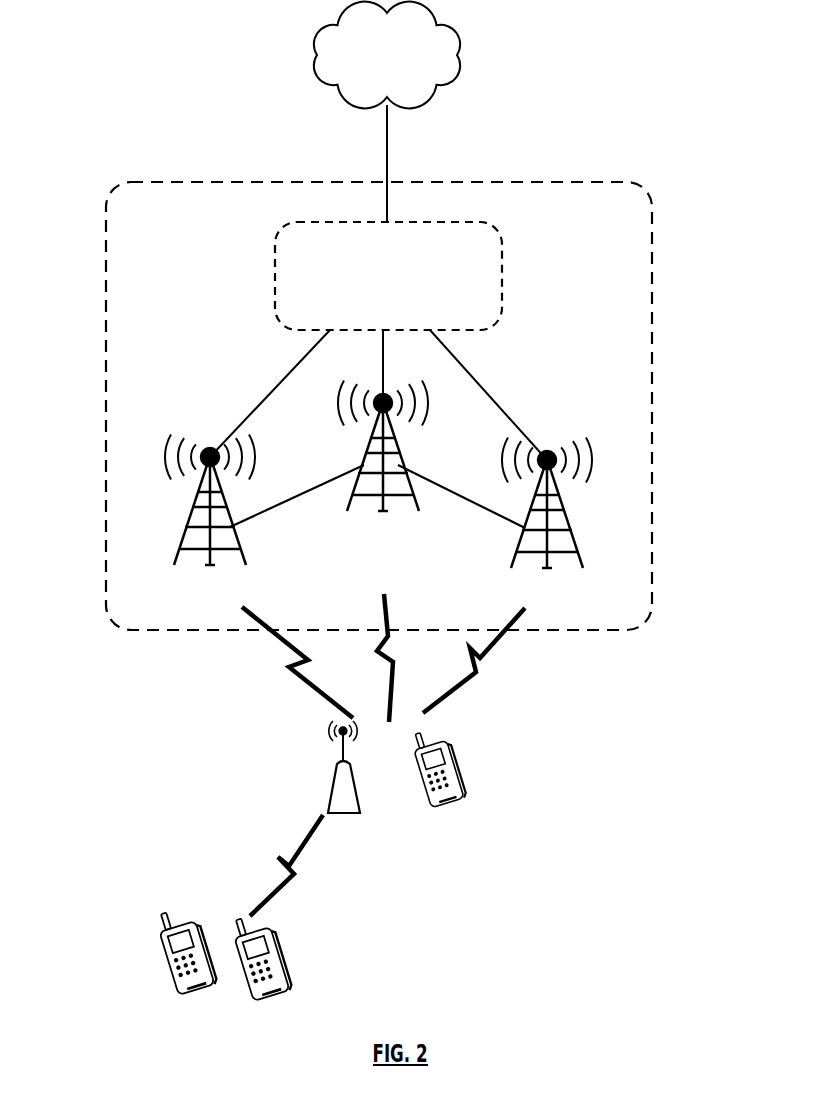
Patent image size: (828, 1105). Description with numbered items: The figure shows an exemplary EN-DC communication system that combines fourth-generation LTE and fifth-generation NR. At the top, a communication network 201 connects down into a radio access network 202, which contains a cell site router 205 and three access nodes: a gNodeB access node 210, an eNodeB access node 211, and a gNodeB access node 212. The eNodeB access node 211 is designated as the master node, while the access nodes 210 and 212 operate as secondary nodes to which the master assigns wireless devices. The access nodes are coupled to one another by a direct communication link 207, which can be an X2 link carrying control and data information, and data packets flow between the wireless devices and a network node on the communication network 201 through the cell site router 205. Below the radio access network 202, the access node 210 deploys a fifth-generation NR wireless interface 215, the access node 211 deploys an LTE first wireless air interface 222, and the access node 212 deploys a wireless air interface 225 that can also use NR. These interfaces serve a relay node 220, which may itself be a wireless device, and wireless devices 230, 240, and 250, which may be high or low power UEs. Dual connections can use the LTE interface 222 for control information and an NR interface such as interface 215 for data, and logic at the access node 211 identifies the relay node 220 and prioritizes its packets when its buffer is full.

The communication network 201 is at (368, 68).
The radio access network 202 is at (180, 181).
The cell site router 205 is at (369, 301).
The direct communication link 207 is at (377, 494).
The access node 210 is at (182, 557).
The access node 211 is at (395, 442).
The access node 212 is at (563, 522).
The wireless interface 215 is at (300, 675).
The relay node 220 is at (343, 818).
The first wireless air interface 222 is at (383, 630).
The wireless air interface 225 is at (480, 664).
The wireless device 230 is at (285, 955).
The wireless device 240 is at (450, 805).
The wireless device 250 is at (183, 978).